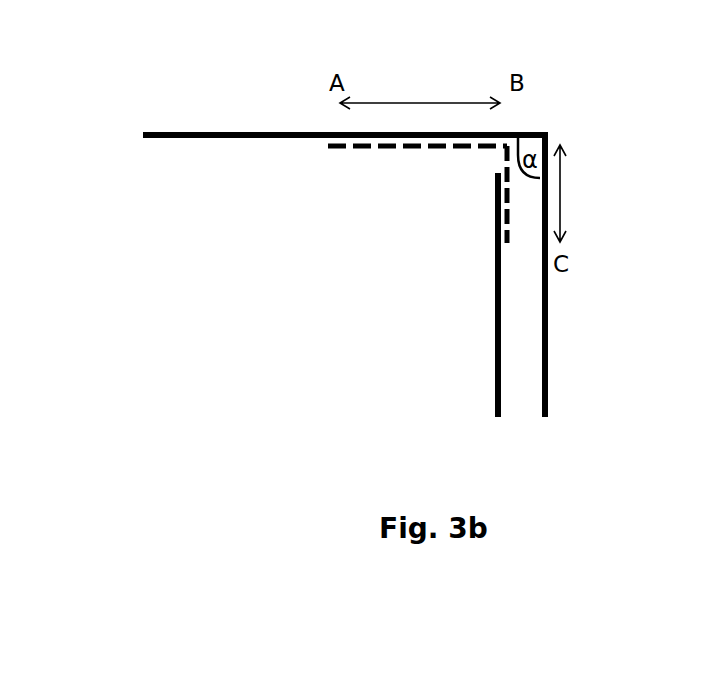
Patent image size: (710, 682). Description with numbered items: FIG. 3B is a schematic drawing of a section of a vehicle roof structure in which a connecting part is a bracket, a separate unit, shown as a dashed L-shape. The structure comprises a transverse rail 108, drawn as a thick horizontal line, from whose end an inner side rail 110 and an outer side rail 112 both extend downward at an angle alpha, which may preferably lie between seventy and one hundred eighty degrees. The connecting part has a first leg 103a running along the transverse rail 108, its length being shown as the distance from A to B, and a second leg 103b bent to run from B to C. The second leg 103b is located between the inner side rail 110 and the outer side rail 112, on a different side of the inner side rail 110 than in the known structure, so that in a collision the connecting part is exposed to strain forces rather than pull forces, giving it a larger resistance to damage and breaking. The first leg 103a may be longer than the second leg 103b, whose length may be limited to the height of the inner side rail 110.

The transverse rail 108 is at (283, 133).
The inner side rail 110 is at (495, 295).
The outer side rail 112 is at (547, 222).
The first leg 103a is at (388, 148).
The second leg 103b is at (506, 227).